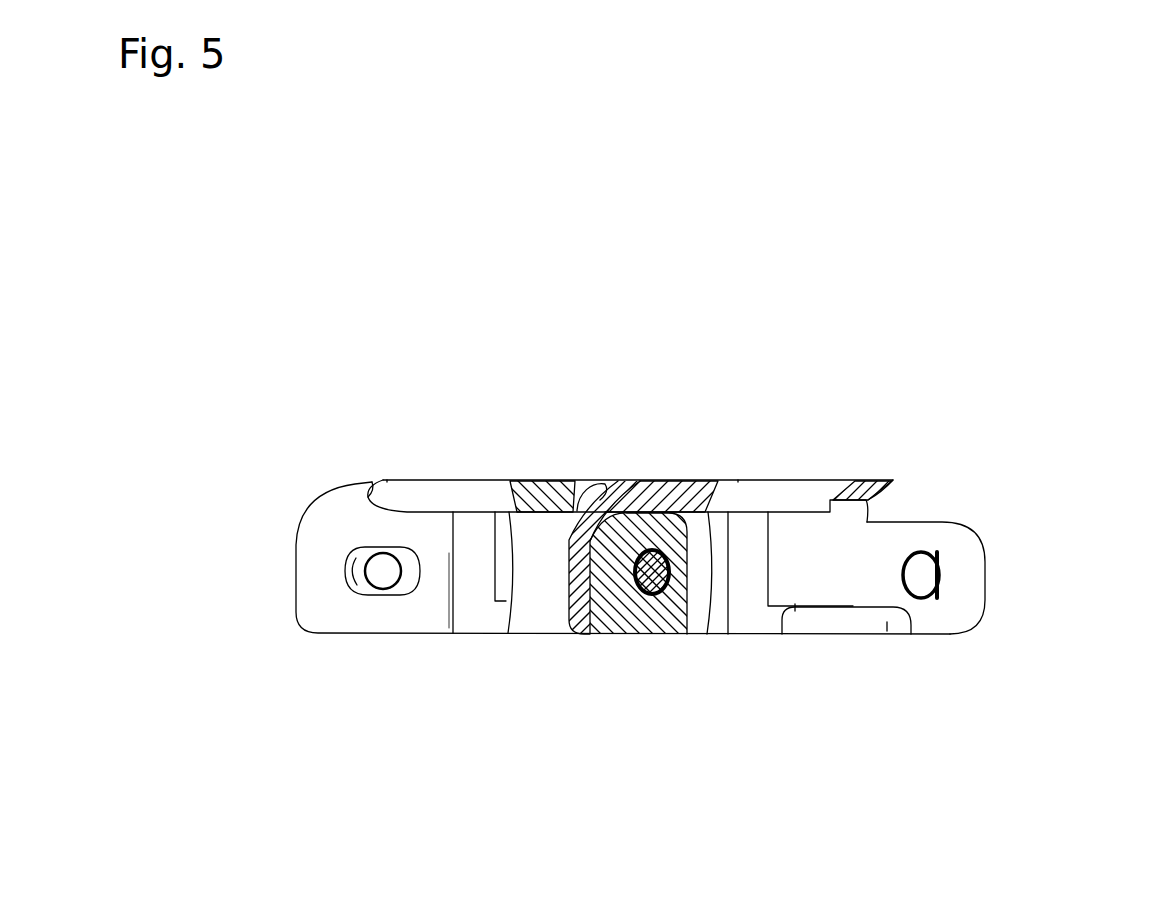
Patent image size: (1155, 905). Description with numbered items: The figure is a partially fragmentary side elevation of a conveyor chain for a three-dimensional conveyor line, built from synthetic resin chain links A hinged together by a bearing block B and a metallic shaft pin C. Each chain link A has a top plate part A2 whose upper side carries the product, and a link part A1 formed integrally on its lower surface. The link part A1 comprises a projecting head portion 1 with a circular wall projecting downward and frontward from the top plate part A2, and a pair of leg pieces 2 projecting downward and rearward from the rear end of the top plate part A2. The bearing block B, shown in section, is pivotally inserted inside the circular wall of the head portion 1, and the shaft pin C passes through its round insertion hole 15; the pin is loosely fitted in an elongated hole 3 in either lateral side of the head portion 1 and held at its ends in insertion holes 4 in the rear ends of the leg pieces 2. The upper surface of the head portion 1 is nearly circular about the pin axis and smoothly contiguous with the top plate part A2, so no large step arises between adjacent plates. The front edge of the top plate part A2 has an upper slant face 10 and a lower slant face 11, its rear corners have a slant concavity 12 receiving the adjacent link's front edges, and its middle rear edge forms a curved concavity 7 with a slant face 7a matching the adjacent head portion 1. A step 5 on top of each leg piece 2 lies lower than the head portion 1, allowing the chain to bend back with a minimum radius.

The projecting head portion 1 is at (313, 582).
The leg pieces 2 is at (848, 573).
The elongated hole 3 is at (362, 596).
The insertion hole 4 is at (927, 597).
The step 5 is at (935, 518).
The curved concavity 7 is at (603, 482).
The slant face 7a is at (610, 482).
The upper slant face 10 is at (355, 483).
The lower slant face 11 is at (330, 512).
The slant concavity 12 is at (878, 482).
The round insertion hole 15 is at (640, 598).
The chain link A is at (385, 482).
The link part A1 is at (423, 634).
The top plate part A2 is at (480, 495).
The bearing block B is at (658, 600).
The shaft pin C is at (385, 593).